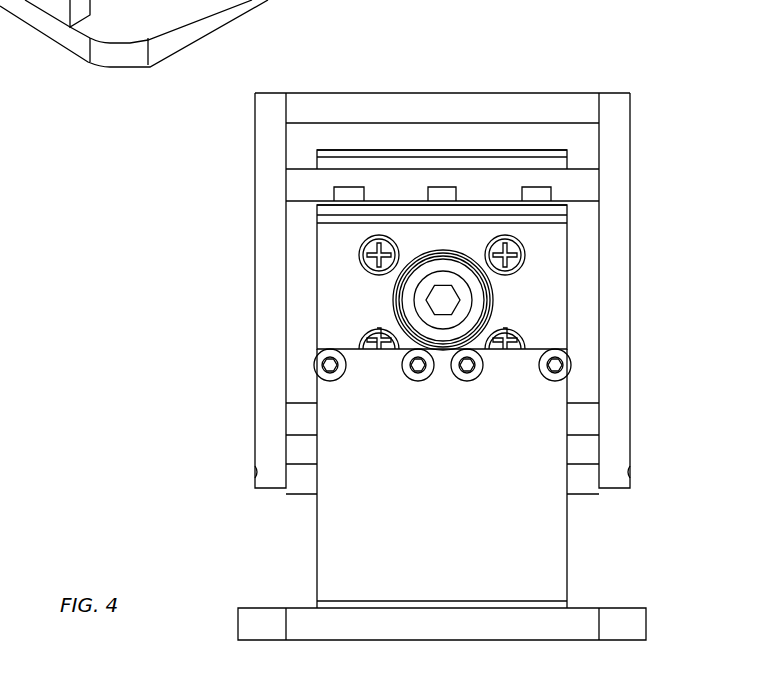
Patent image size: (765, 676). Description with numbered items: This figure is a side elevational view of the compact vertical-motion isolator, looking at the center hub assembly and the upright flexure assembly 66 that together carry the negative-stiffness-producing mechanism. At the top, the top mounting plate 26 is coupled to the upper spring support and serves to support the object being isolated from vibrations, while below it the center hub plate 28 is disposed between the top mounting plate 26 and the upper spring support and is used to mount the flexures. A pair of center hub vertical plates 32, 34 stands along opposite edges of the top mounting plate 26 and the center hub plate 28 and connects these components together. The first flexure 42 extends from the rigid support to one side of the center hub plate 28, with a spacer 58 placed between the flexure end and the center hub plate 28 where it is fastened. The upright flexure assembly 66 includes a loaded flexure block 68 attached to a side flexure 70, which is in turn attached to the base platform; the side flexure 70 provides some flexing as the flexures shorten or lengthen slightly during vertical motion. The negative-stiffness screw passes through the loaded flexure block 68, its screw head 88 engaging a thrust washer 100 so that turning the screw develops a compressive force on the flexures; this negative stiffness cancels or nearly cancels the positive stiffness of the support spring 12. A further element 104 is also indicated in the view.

The support spring 12 is at (185, 0).
The top mounting plate 26 is at (507, 93).
The center hub vertical plate 32 is at (255, 139).
The center hub vertical plate 34 is at (630, 230).
The spacer 58 is at (485, 160).
The first flexure 42 is at (557, 150).
The center hub plate 28 is at (300, 184).
The plate 104 is at (323, 208).
The loaded flexure block 68 is at (533, 302).
The thrust washer 100 is at (405, 289).
The screw head 88 is at (431, 309).
The upright flexure assembly 66 is at (513, 420).
The side flexure 70 is at (524, 552).